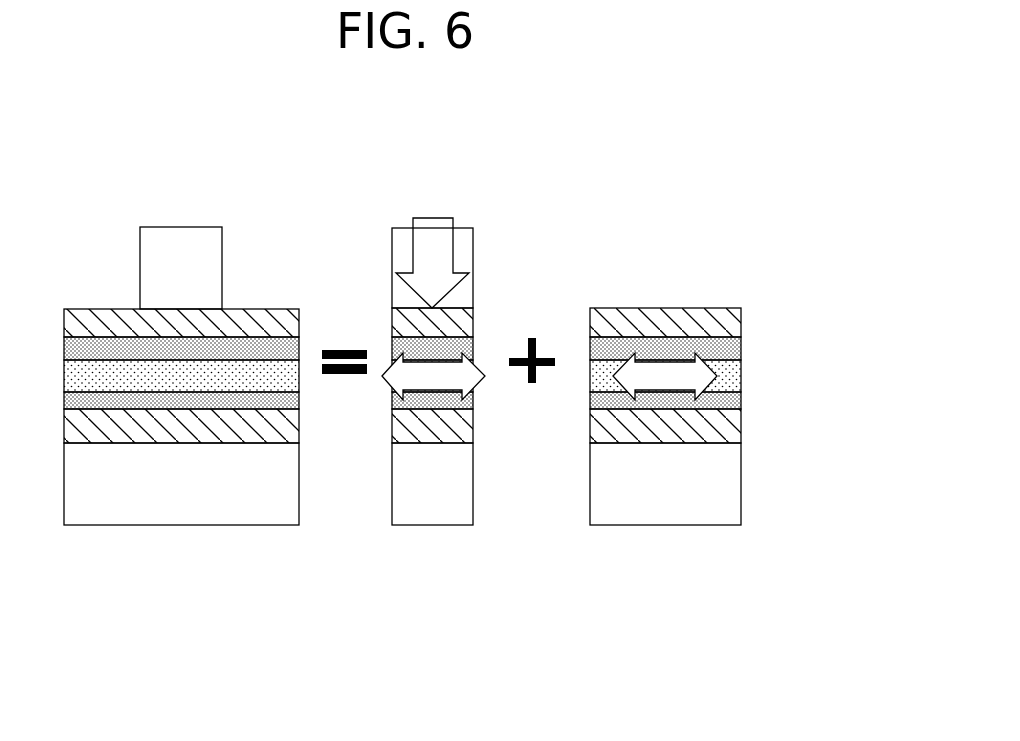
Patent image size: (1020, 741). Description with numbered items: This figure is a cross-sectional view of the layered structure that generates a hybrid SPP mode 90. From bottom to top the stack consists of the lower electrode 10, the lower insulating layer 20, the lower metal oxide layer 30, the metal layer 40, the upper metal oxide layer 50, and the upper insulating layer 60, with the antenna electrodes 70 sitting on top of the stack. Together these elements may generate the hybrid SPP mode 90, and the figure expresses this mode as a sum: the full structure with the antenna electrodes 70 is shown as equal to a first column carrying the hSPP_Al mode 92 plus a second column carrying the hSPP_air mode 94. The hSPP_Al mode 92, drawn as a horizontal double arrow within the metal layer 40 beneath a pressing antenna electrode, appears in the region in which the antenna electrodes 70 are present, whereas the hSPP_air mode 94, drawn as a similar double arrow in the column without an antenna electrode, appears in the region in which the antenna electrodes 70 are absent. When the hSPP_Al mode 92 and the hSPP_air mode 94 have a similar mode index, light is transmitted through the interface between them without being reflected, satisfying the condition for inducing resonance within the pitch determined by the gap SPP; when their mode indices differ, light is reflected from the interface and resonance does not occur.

The lower electrode 10 is at (732, 481).
The lower insulating layer 20 is at (732, 430).
The lower metal oxide layer 30 is at (732, 401).
The metal layer 40 is at (732, 376).
The upper metal oxide layer 50 is at (732, 350).
The upper insulating layer 60 is at (732, 323).
The antenna electrodes 70 is at (401, 237).
The hybrid SPP mode 90 is at (527, 246).
The hSPP_Al mode 92 is at (487, 372).
The hSPP_air mode 94 is at (614, 355).